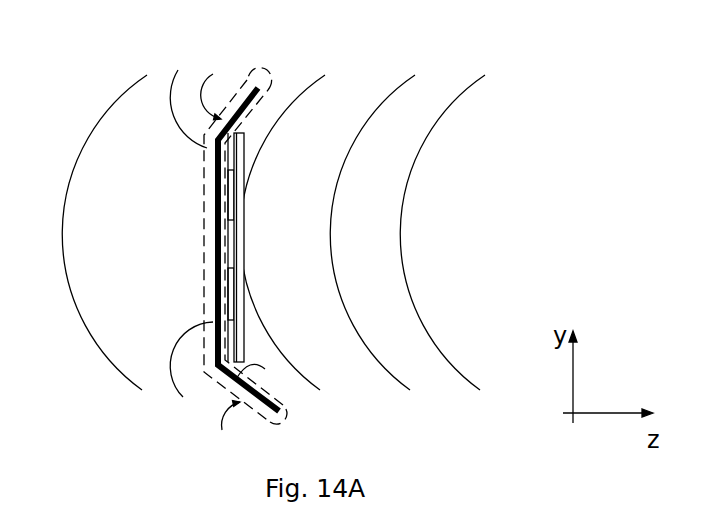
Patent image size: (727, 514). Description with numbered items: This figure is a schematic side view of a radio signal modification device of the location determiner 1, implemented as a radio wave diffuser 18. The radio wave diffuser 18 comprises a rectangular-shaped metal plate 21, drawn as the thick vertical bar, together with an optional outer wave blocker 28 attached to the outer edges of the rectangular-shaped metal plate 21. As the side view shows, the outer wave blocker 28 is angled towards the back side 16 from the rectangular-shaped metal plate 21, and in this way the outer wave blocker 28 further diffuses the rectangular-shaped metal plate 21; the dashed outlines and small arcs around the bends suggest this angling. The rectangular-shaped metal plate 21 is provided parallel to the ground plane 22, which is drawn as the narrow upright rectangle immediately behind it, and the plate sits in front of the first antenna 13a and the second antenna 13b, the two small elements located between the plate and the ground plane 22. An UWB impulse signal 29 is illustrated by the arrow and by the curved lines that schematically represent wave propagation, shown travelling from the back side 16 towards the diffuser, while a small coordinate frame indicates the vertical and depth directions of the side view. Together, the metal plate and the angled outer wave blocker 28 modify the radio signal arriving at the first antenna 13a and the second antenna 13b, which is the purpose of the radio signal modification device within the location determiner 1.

The location determiner 1 is at (490, 48).
The first antenna 13a is at (223, 213).
The second antenna 13b is at (227, 300).
The back side 16 is at (647, 250).
The radio wave diffuser 18 is at (239, 91).
The rectangular-shaped metal plate 21 is at (217, 263).
The ground plane 22 is at (245, 234).
The outer wave blocker 28 is at (238, 106).
The UWB impulse signal 29 is at (452, 215).